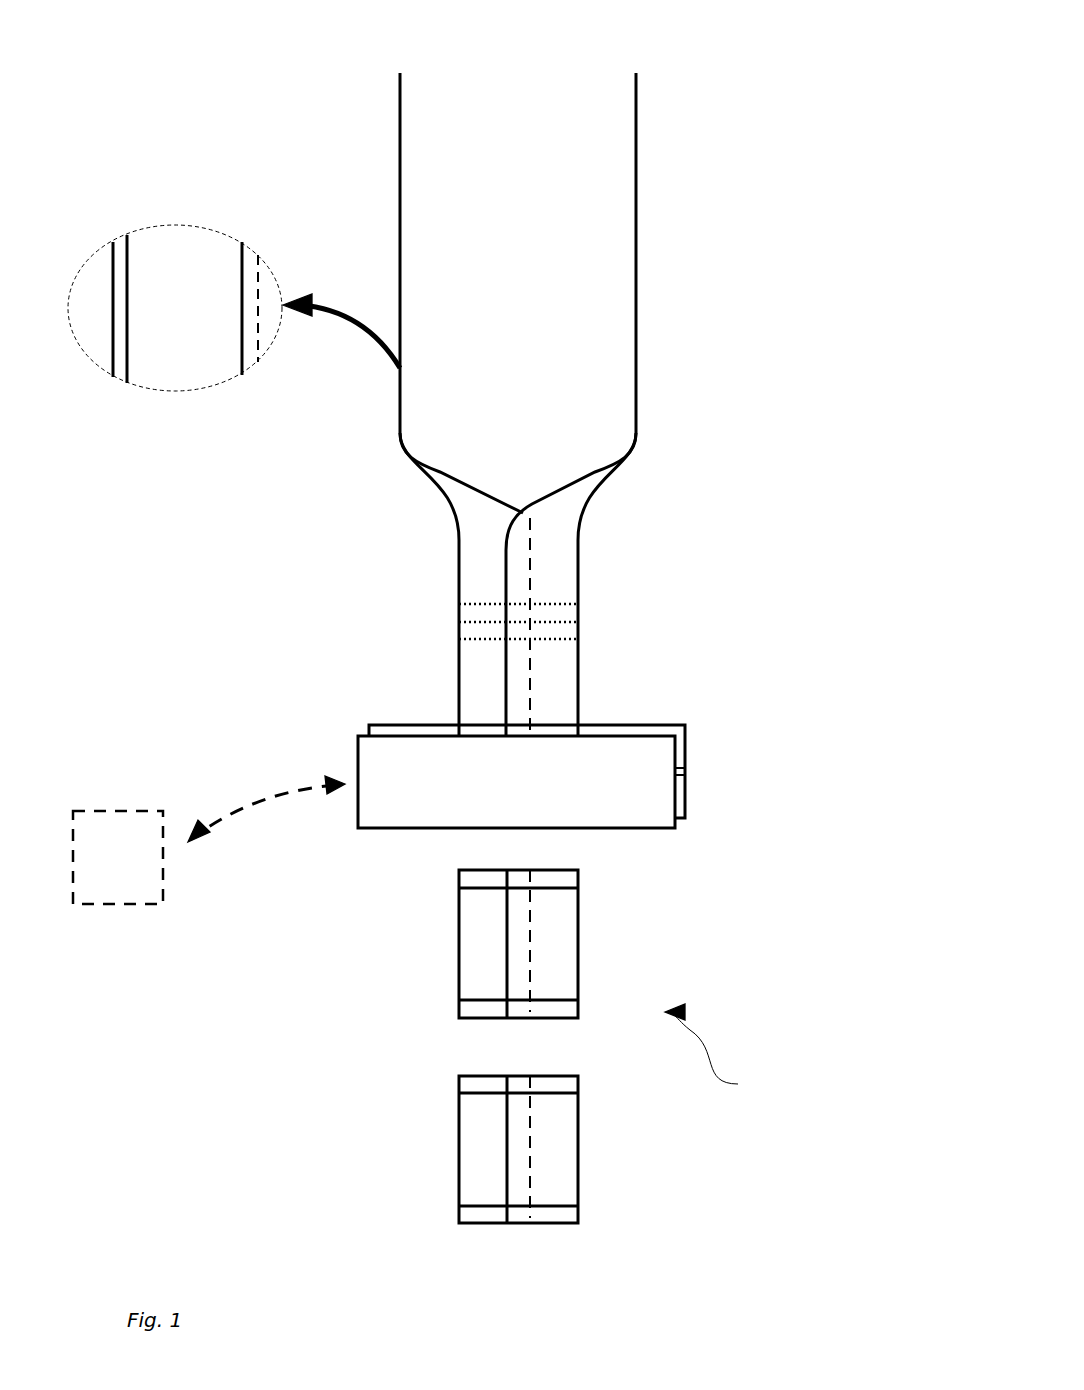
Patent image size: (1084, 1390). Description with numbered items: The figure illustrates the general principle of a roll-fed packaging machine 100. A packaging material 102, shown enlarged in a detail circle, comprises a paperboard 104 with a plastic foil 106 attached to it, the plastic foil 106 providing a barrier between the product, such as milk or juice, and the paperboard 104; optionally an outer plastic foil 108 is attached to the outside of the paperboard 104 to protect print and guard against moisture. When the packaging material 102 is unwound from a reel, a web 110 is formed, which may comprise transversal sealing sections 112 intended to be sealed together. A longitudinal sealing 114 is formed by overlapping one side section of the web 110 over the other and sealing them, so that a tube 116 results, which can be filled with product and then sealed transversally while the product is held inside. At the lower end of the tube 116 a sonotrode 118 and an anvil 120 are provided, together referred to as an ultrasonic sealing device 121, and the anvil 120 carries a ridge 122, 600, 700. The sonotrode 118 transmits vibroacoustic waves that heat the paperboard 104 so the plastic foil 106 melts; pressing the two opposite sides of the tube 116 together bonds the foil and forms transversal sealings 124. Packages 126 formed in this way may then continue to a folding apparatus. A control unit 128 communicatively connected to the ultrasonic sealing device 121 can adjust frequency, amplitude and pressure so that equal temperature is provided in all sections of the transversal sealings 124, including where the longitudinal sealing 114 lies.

The roll-fed packaging machine 100 is at (505, 613).
The packaging material 102 is at (231, 309).
The paperboard 104 is at (197, 378).
The plastic foil 106 is at (120, 372).
The outer plastic foil 108 is at (253, 365).
The web 110 is at (688, 77).
The transversal sealing sections 112 is at (480, 630).
The longitudinal sealing 114 is at (513, 702).
The tube 116 is at (550, 584).
The sonotrode 118 is at (652, 820).
The anvil 120 is at (682, 800).
The ultrasonic sealing device 121 is at (653, 812).
The ridge 122 is at (781, 755).
The ridge 600 is at (781, 755).
The ridge 700 is at (685, 768).
The transversal sealings 124 is at (470, 1085).
The packages 126 is at (724, 1049).
The control unit 128 is at (110, 886).